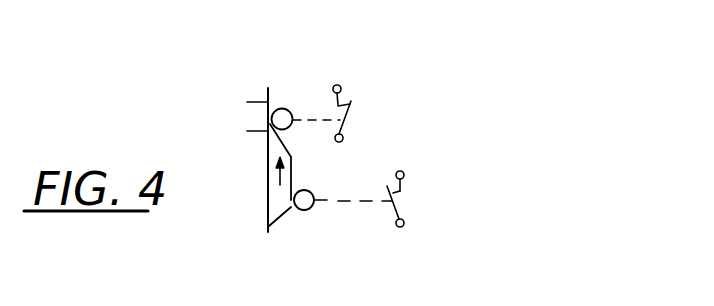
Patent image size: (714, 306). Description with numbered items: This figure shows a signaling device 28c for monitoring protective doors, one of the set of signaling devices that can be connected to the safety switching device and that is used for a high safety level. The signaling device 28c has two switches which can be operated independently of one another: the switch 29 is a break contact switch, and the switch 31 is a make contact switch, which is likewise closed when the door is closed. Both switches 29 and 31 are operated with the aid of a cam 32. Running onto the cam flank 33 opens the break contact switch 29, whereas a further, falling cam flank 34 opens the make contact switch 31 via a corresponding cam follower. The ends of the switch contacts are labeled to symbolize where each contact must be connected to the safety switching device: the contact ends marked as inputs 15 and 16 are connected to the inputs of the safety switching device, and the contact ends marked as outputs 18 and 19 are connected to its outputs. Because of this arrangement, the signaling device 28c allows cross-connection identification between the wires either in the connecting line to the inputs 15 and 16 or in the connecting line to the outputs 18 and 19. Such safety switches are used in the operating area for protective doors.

The input 15 is at (404, 225).
The input 16 is at (343, 139).
The output 18 is at (336, 85).
The output 19 is at (403, 172).
The signaling device 28c is at (502, 158).
The break contact switch 29 is at (353, 107).
The make contact switch 31 is at (391, 203).
The cam 32 is at (266, 218).
The cam flank 33 is at (270, 137).
The falling cam flank 34 is at (284, 219).